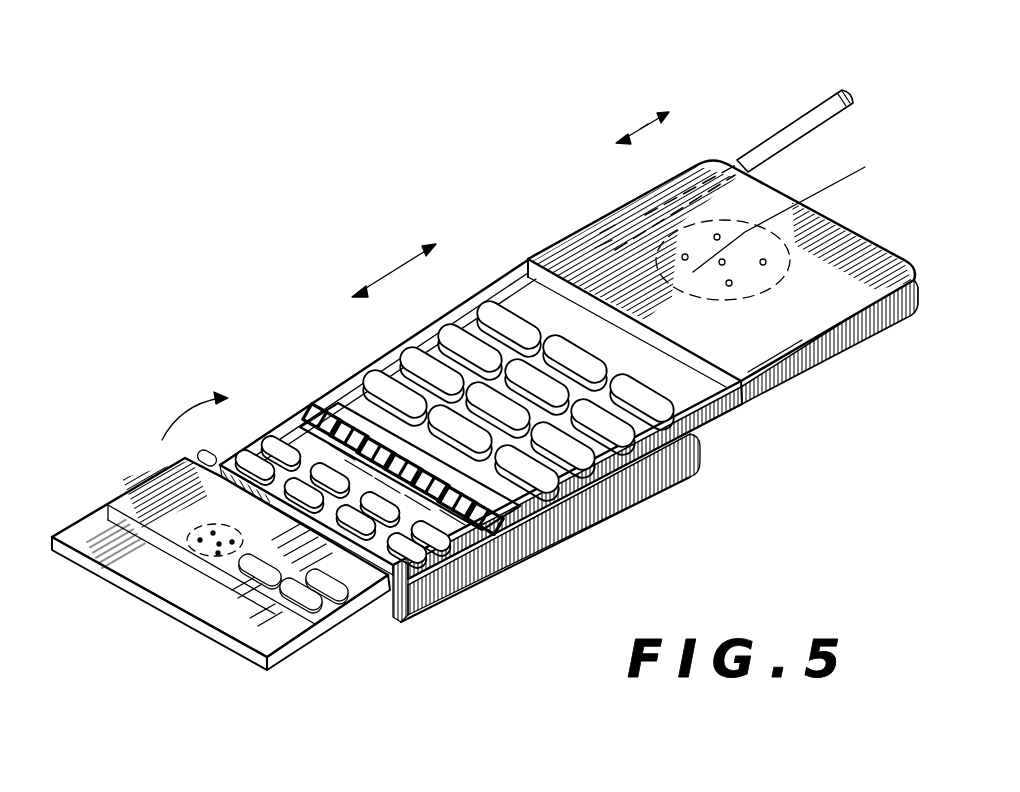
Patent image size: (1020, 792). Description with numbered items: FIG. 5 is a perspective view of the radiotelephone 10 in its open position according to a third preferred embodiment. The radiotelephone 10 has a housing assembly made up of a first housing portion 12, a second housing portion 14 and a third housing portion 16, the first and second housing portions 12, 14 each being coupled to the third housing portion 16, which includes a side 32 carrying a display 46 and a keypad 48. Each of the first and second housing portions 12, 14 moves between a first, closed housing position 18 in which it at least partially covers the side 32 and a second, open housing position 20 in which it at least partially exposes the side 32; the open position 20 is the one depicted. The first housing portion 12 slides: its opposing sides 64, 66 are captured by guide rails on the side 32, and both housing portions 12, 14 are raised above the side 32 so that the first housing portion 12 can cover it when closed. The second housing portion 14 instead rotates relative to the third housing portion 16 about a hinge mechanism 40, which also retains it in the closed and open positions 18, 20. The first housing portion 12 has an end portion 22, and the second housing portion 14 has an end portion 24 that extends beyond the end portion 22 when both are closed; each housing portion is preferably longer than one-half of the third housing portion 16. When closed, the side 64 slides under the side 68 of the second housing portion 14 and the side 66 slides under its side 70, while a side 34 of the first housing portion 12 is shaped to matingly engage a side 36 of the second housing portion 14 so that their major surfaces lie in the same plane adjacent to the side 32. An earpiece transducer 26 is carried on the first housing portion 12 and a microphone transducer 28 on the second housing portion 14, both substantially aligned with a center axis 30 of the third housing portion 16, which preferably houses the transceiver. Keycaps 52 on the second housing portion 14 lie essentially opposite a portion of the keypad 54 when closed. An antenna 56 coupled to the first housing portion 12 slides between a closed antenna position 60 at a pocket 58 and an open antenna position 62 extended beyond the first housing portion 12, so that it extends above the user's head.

The radiotelephone 10 is at (253, 295).
The first housing portion 12 is at (721, 297).
The second housing portion 14 is at (221, 587).
The third housing portion 16 is at (524, 446).
The first, closed housing position 18 is at (299, 342).
The second, open housing position 20 is at (299, 345).
The end portion of first housing portion 22 is at (650, 457).
The end portion of second housing portion 24 is at (325, 654).
The earpiece transducer 26 is at (790, 257).
The microphone transducer 28 is at (221, 548).
The center axis 30 is at (828, 172).
The side of third housing portion 32 is at (363, 402).
The side of first housing portion 34 is at (728, 392).
The side of second housing portion 36 is at (165, 615).
The hinge mechanism 40 is at (408, 618).
The display 46 is at (520, 560).
The keypad 48 is at (688, 448).
The keycap 52 is at (315, 592).
The keypad 54 is at (440, 570).
The antenna 56 is at (835, 112).
The pocket 58 is at (612, 247).
The first, closed antenna position 60 is at (624, 138).
The second, open antenna position 62 is at (667, 108).
The side of first housing portion 64 is at (537, 287).
The side of first housing portion 66 is at (757, 398).
The side of second housing portion 68 is at (105, 505).
The side of second housing portion 70 is at (283, 657).